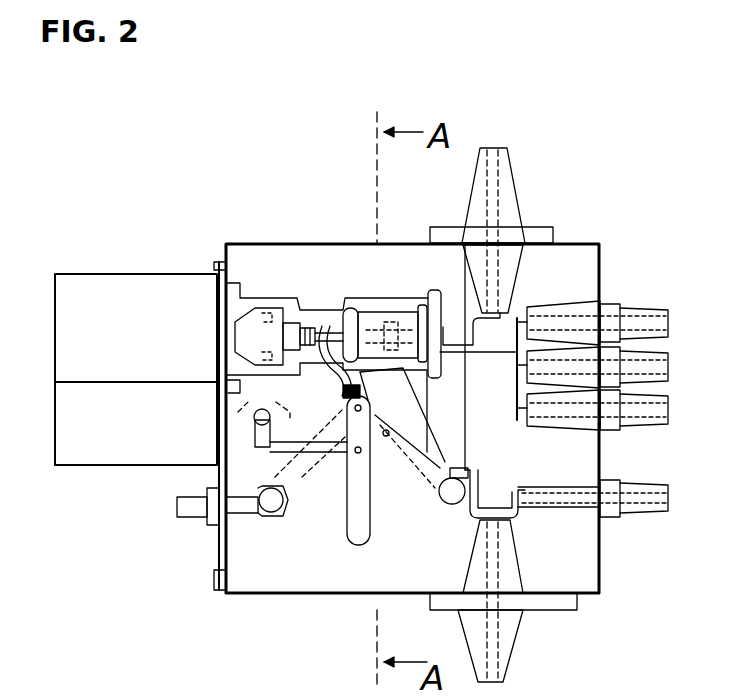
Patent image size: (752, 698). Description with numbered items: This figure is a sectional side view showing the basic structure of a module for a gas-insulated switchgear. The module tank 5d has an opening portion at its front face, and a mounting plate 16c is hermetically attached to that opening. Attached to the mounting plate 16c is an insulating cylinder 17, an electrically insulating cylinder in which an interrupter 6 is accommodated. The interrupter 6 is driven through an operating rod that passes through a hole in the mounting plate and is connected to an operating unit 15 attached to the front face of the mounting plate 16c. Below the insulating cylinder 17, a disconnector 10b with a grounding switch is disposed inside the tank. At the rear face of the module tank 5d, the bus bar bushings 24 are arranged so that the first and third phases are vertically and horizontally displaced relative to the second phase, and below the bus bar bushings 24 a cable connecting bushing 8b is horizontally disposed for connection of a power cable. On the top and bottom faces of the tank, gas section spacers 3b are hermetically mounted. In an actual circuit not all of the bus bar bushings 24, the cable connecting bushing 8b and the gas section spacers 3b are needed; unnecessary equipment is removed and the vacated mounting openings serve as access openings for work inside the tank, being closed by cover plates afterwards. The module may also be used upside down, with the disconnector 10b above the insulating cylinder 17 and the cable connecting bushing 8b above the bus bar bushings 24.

The operating unit 15 is at (97, 273).
The mounting plate 16c is at (216, 553).
The insulating cylinder 17 is at (360, 297).
The interrupter 6 is at (394, 300).
The gas section spacer 3b is at (548, 227).
The module tank 5d is at (601, 262).
The bus bar bushings 24 is at (612, 298).
The cable connecting bushing 8b is at (616, 480).
The disconnector with grounding switch 10b is at (355, 548).